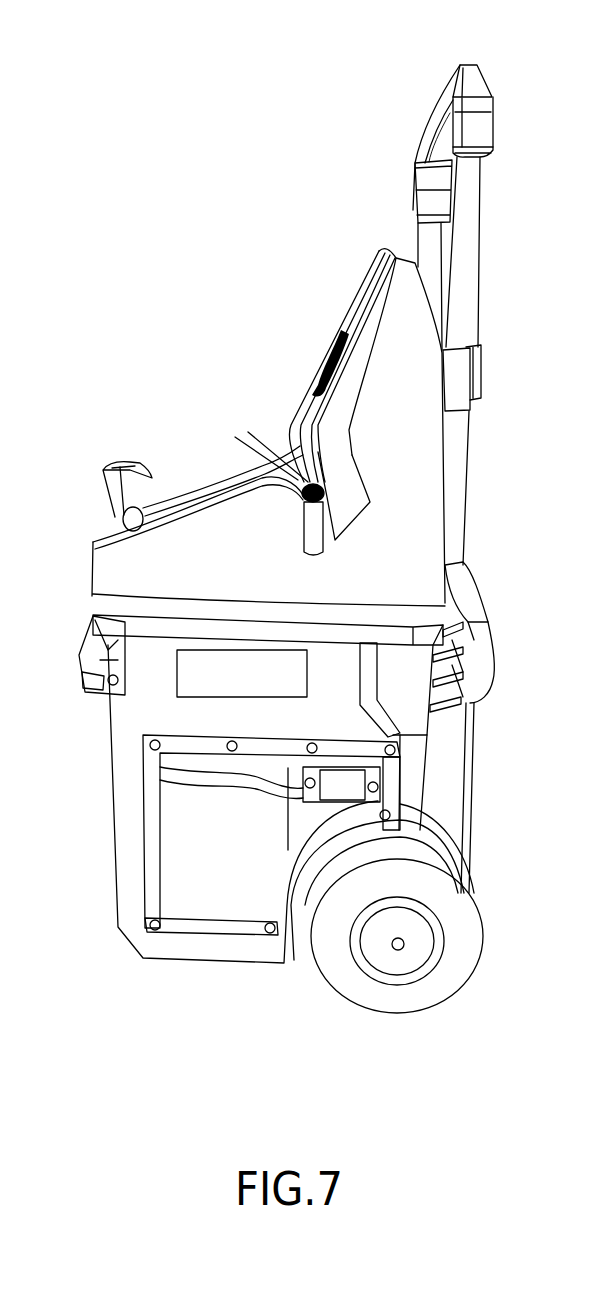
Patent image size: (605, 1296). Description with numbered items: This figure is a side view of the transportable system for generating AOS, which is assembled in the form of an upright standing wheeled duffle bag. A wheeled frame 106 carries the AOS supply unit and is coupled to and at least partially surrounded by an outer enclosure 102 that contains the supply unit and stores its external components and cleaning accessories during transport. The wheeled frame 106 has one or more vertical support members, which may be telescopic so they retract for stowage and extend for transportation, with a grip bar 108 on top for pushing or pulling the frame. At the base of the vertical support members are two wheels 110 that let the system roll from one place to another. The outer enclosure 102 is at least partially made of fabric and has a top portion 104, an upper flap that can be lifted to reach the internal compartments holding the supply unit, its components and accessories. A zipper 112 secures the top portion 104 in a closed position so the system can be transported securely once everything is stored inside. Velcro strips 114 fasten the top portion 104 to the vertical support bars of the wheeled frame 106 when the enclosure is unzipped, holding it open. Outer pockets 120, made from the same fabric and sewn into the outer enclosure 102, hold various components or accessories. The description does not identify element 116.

The outer enclosure 102 is at (112, 742).
The top portion 104 is at (368, 268).
The wheeled frame 106 is at (460, 483).
The grip bar 108 is at (470, 62).
The wheels 110 is at (483, 916).
The zipper 112 is at (280, 480).
The Velcro strips 114 is at (480, 372).
The strap 116 is at (492, 653).
The outer pockets 120 is at (170, 778).